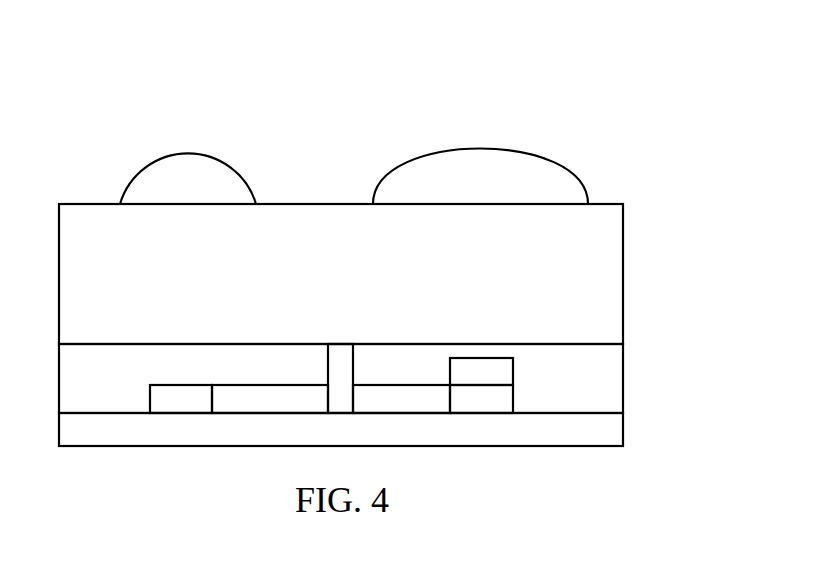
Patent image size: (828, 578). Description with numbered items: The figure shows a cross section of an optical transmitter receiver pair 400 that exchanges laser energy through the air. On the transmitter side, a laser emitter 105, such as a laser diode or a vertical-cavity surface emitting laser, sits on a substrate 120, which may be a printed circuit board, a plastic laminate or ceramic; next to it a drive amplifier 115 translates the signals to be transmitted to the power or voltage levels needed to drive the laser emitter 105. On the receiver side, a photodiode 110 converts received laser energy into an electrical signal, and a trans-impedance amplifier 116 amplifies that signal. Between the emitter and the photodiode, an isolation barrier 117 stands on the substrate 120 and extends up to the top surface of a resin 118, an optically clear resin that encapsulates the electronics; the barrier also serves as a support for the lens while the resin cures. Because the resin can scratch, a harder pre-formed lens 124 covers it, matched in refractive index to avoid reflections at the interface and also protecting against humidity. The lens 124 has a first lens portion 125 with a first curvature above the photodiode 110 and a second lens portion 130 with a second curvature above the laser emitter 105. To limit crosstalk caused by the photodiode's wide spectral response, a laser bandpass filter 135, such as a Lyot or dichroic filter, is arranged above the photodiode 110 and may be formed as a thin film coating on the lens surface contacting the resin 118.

The optical transmitter receiver pair 400 is at (552, 47).
The lens 124 is at (623, 251).
The resin 118 is at (623, 375).
The substrate 120 is at (623, 423).
The second lens portion 130 is at (220, 163).
The first lens portion 125 is at (543, 159).
The laser emitter 105 is at (150, 393).
The drive amplifier 115 is at (235, 383).
The isolation barrier 117 is at (338, 413).
The trans-impedance amplifier 116 is at (375, 383).
The photodiode 110 is at (513, 393).
The laser bandpass filter 135 is at (513, 364).